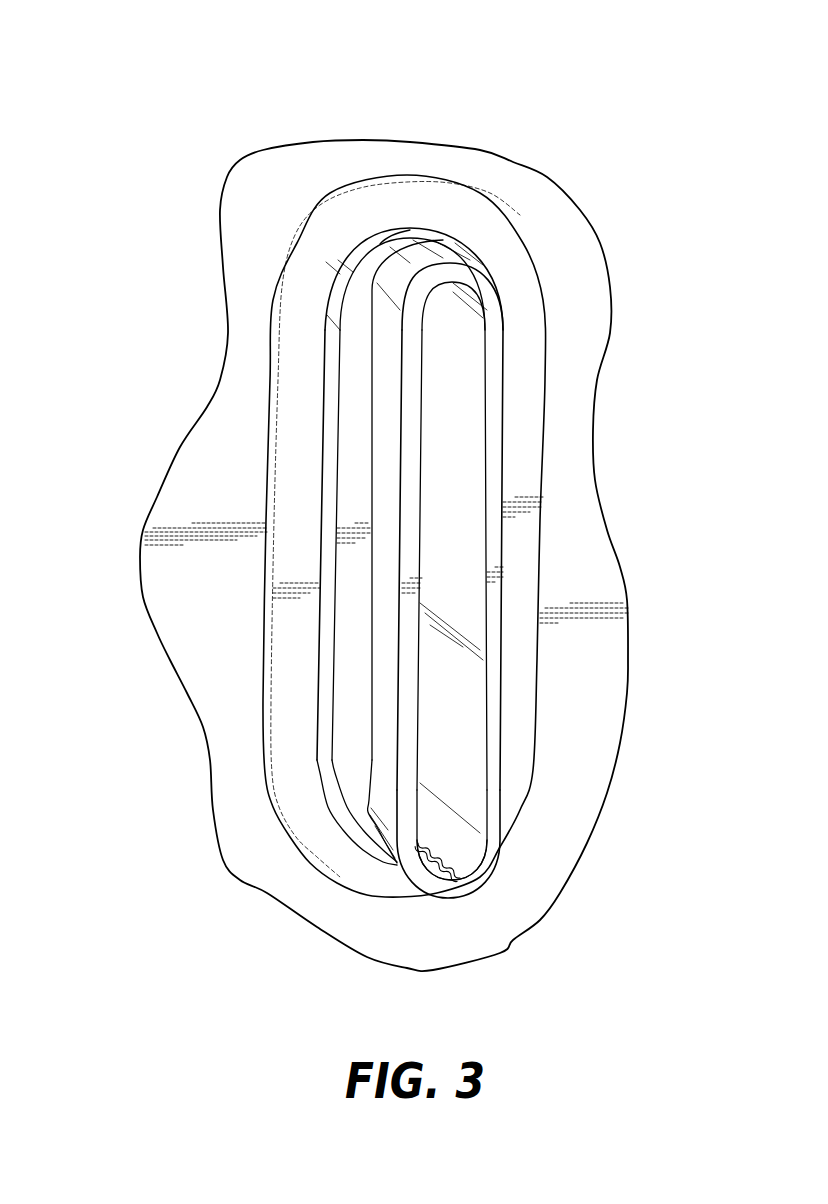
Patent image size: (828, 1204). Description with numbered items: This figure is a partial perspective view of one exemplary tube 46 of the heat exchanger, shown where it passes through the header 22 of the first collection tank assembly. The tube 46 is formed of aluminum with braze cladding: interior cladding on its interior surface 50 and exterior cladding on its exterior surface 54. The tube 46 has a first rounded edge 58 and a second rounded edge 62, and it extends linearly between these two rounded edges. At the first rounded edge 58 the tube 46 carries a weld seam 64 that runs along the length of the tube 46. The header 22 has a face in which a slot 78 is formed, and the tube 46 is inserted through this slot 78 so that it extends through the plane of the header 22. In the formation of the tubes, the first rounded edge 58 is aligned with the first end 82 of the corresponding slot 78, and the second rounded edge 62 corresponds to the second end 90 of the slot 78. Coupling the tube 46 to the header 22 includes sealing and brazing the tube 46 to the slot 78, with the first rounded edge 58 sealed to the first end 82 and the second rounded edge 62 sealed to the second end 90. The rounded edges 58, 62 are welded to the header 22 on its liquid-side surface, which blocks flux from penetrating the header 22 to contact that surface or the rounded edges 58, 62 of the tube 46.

The header 22 is at (220, 617).
The tube 46 is at (495, 475).
The interior surface 50 is at (473, 713).
The exterior surface 54 is at (387, 740).
The first rounded edge 58 is at (460, 890).
The second rounded edge 62 is at (462, 275).
The weld seam 64 is at (453, 862).
The slot 78 is at (347, 558).
The first end 82 is at (397, 847).
The second end 90 is at (393, 243).